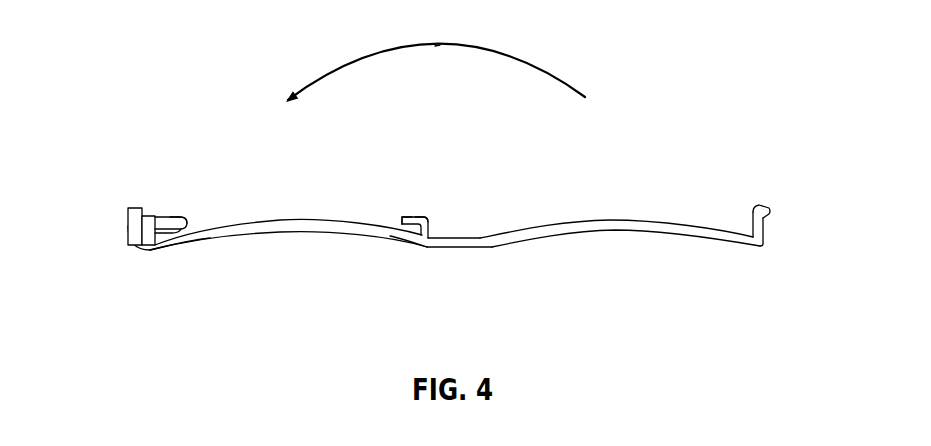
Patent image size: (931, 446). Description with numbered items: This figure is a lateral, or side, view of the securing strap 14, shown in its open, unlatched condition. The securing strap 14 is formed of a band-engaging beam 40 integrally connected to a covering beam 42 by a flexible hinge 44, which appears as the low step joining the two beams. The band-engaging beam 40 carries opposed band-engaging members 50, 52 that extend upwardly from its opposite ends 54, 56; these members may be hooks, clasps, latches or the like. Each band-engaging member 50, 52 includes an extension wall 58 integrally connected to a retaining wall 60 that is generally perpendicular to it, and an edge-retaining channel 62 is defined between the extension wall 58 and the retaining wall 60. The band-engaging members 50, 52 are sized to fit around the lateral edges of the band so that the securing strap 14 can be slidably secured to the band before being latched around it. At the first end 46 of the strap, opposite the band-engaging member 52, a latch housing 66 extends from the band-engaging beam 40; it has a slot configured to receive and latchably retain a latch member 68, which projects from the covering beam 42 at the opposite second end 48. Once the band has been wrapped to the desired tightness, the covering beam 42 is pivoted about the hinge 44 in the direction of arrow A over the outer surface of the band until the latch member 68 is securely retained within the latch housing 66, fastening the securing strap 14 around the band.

The securing strap 14 is at (203, 103).
The arrow A is at (440, 45).
The band-engaging beam 40 is at (268, 222).
The covering beam 42 is at (608, 221).
The flexible hinge 44 is at (456, 238).
The first end 46 is at (131, 248).
The second end 48 is at (757, 248).
The band-engaging member 50 is at (173, 216).
The band-engaging member 52 is at (410, 216).
The end of band-engaging beam 54 is at (176, 246).
The end of band-engaging beam 56 is at (403, 248).
The extension wall 58 is at (185, 227).
The retaining wall 60 is at (185, 216).
The edge-retaining channel 62 is at (152, 215).
The latch housing 66 is at (126, 234).
The latch member 68 is at (757, 205).